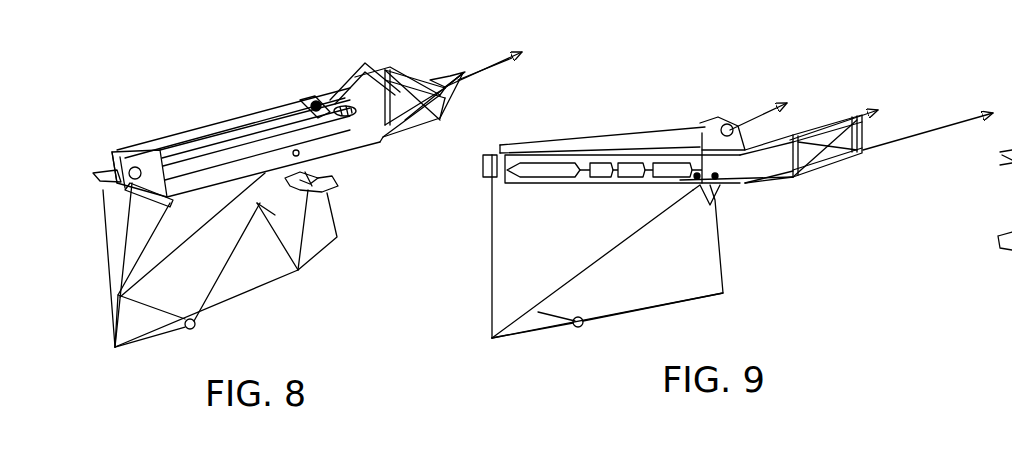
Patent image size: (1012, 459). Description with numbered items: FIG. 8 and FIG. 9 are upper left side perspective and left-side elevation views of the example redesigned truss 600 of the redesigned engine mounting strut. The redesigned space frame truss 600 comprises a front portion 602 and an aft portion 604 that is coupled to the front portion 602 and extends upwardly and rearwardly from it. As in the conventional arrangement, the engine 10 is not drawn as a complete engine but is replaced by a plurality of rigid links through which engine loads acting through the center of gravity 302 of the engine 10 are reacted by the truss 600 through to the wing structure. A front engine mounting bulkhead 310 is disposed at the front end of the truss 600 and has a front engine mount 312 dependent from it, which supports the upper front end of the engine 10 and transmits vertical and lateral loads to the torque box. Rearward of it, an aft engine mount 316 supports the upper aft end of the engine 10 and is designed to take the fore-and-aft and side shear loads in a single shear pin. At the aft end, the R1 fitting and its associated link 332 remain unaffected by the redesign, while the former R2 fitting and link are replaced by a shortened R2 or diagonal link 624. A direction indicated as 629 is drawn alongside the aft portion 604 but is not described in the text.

In FIG. 8, the truss 600 is at (320, 108).
In FIG. 9, the truss 600 is at (738, 113).
In FIG. 8, the front portion 602 is at (263, 108).
In FIG. 9, the front portion 602 is at (579, 136).
In FIG. 8, the aft portion 604 is at (436, 120).
In FIG. 9, the aft portion 604 is at (824, 80).
In FIG. 8, the diagonal link 624 is at (497, 67).
In FIG. 9, the diagonal link 624 is at (930, 130).
In FIG. 8, the extension direction 629 is at (440, 77).
In FIG. 8, the front engine mounting bulkhead 310 is at (108, 140).
In FIG. 8, the front engine mount 312 is at (100, 193).
In FIG. 8, the aft engine mount 316 is at (322, 181).
In FIG. 9, the link 332 is at (746, 92).
In FIG. 9, the R1 fitting R1 is at (724, 122).
In FIG. 8, the engine 10 is at (241, 260).
In FIG. 9, the engine 10 is at (658, 250).
In FIG. 8, the center of gravity 302 is at (196, 324).
In FIG. 9, the center of gravity 302 is at (584, 323).